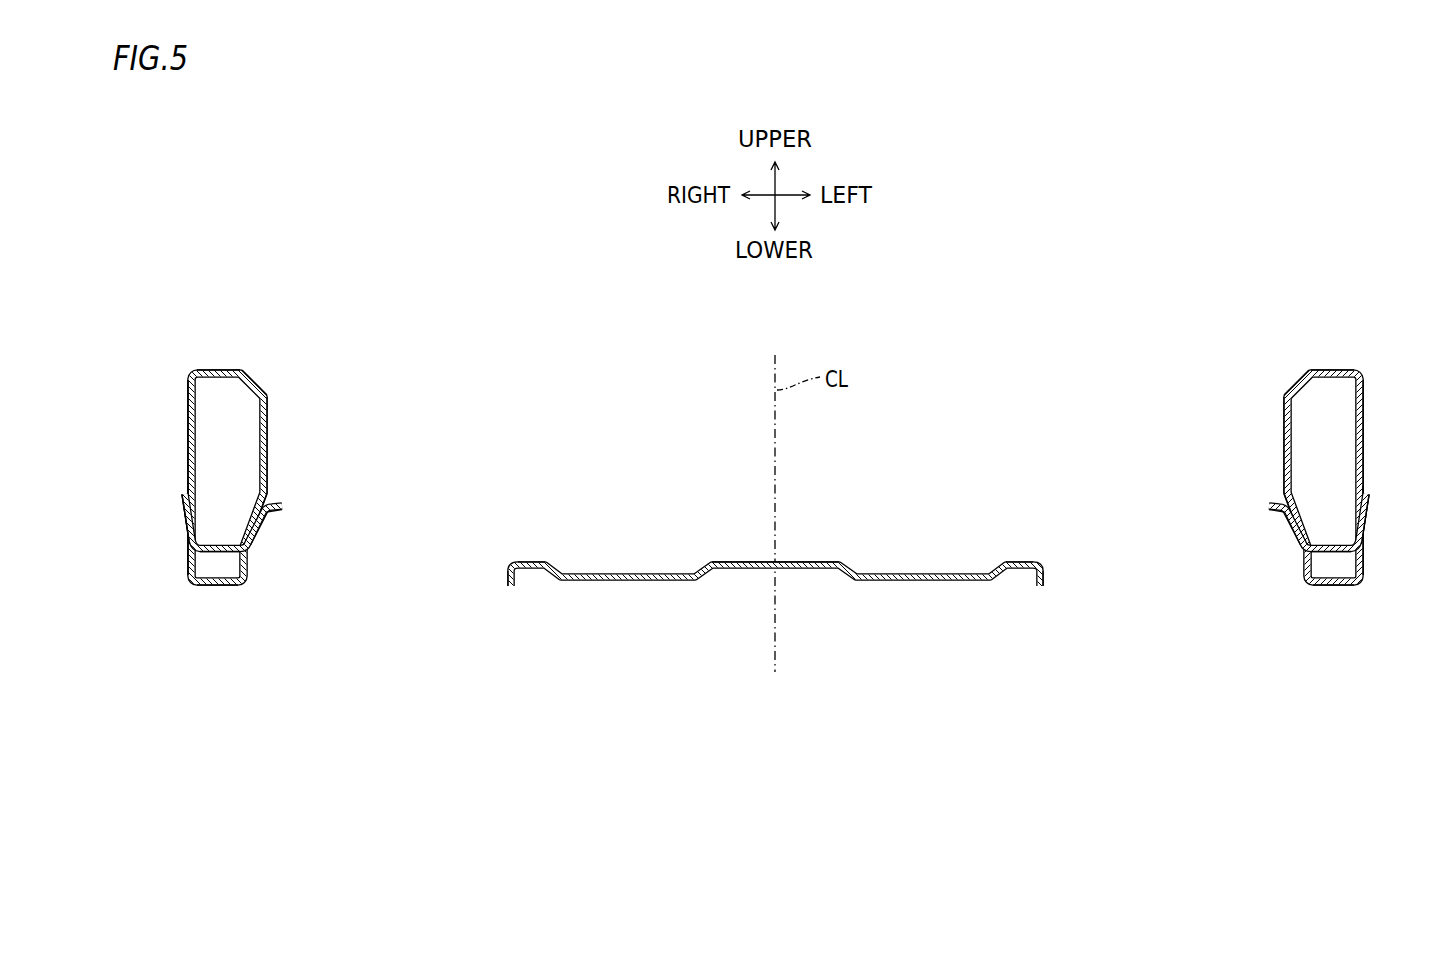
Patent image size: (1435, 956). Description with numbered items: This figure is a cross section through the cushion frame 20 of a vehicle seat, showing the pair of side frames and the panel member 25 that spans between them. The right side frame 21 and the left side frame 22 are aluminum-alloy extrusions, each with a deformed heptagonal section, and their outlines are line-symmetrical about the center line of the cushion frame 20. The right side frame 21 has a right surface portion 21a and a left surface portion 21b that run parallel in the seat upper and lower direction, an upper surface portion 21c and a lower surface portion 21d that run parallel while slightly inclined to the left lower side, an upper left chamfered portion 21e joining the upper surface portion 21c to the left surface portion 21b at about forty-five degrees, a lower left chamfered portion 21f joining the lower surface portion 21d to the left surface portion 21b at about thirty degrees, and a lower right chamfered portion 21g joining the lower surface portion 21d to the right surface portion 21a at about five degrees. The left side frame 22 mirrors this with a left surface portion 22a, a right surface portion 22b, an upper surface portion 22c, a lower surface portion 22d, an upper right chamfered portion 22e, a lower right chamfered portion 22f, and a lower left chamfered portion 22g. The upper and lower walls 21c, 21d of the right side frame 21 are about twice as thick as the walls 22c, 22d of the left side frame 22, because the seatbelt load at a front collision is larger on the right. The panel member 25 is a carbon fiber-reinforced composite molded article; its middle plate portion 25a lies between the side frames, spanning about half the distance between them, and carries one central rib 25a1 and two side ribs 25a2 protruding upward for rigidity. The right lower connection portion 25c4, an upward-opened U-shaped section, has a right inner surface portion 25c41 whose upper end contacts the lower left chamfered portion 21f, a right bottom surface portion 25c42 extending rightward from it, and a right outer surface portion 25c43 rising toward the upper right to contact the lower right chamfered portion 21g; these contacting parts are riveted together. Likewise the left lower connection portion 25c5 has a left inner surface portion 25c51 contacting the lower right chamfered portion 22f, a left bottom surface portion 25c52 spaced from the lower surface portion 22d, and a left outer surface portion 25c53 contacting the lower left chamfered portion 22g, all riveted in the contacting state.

The cushion frame 20 is at (775, 477).
The right side frame 21 is at (200, 370).
The right surface portion 21a is at (188, 440).
The left surface portion 21b is at (267, 445).
The upper surface portion 21c is at (220, 370).
The lower surface portion 21d is at (212, 583).
The upper left chamfered portion 21e is at (252, 382).
The lower left chamfered portion 21f is at (250, 552).
The lower right chamfered portion 21g is at (183, 494).
The left side frame 22 is at (1351, 370).
The left surface portion 22a is at (1363, 440).
The right surface portion 22b is at (1284, 445).
The upper surface portion 22c is at (1325, 370).
The lower surface portion 22d is at (1340, 583).
The upper right chamfered portion 22e is at (1297, 383).
The lower right chamfered portion 22f is at (1302, 550).
The lower left chamfered portion 22g is at (1368, 494).
The panel member 25 is at (775, 541).
The middle plate portion 25a is at (644, 580).
The central rib 25a1 is at (806, 562).
The side ribs 25a2 is at (542, 563).
The right lower connection portion 25c4 is at (232, 586).
The right inner surface portion 25c41 is at (256, 525).
The right bottom surface portion 25c42 is at (222, 553).
The right outer surface portion 25c43 is at (190, 533).
The left lower connection portion 25c5 is at (1320, 586).
The left inner surface portion 25c51 is at (1295, 525).
The left bottom surface portion 25c52 is at (1329, 553).
The left outer surface portion 25c53 is at (1363, 533).